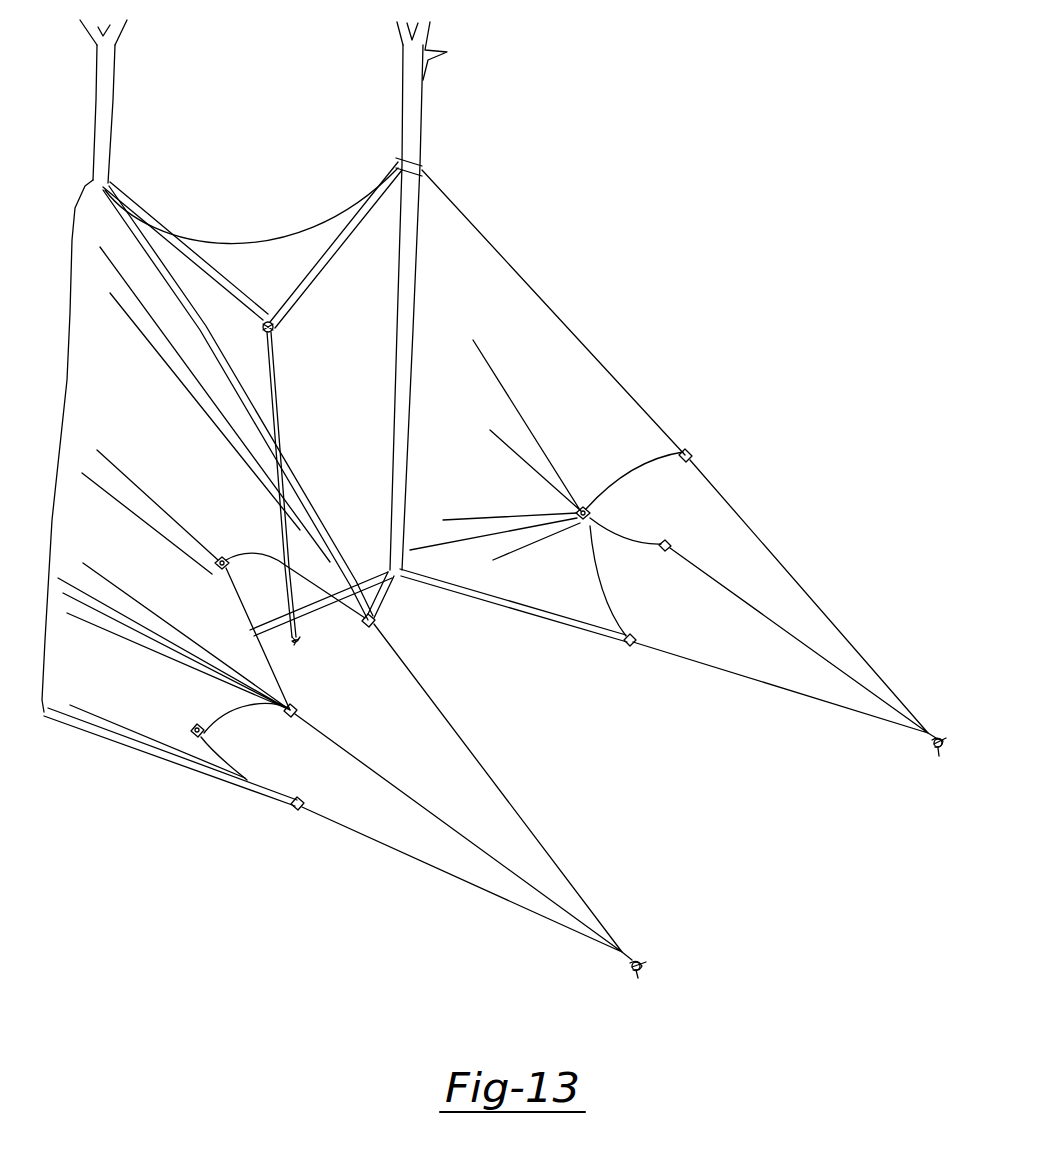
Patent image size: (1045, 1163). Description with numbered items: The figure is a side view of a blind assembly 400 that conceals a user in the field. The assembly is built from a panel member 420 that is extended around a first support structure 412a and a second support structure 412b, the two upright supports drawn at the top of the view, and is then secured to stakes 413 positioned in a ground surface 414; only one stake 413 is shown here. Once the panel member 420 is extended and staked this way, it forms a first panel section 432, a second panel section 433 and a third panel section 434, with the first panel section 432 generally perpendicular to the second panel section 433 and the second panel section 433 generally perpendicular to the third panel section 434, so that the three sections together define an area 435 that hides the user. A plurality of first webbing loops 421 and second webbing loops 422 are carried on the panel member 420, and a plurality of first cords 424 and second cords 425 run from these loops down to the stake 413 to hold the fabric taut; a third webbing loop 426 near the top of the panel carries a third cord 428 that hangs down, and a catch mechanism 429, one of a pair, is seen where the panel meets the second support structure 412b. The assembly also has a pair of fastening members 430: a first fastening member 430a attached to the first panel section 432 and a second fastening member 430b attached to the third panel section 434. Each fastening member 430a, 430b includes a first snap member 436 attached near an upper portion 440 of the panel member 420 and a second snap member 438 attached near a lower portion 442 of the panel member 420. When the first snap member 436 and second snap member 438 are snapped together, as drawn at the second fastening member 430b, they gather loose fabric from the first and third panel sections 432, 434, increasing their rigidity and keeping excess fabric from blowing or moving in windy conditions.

The blind assembly 400 is at (525, 138).
The first support structure 412a is at (406, 118).
The second support structure 412b is at (102, 92).
The stake 413 is at (940, 738).
The ground surface 414 is at (682, 792).
The panel member 420 is at (68, 310).
The first webbing loop 421 is at (687, 449).
The second webbing loop 422 is at (366, 628).
The first cord 424 is at (742, 512).
The second cord 425 is at (460, 722).
The third webbing loop 426 is at (276, 330).
The third cord 428 is at (280, 368).
The catch mechanism 429 is at (424, 168).
The fastening member 430 is at (583, 502).
The first fastening member 430a is at (230, 555).
The second fastening member 430b is at (578, 527).
The first panel section 432 is at (127, 405).
The second panel section 433 is at (354, 441).
The third panel section 434 is at (487, 311).
The area 435 is at (487, 672).
The first snap member 436 is at (214, 566).
The second snap member 438 is at (194, 726).
The upper portion 440 is at (156, 295).
The lower portion 442 is at (147, 750).